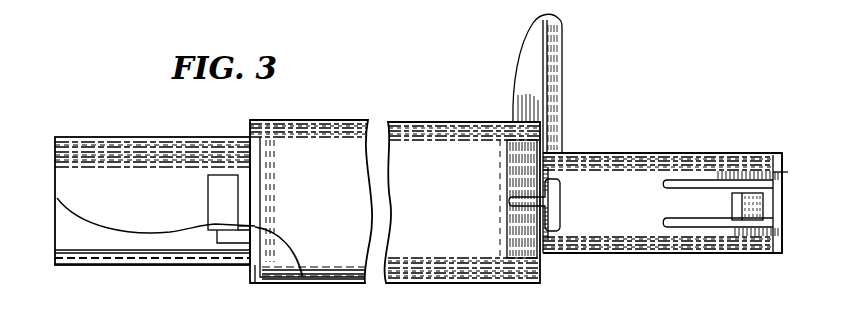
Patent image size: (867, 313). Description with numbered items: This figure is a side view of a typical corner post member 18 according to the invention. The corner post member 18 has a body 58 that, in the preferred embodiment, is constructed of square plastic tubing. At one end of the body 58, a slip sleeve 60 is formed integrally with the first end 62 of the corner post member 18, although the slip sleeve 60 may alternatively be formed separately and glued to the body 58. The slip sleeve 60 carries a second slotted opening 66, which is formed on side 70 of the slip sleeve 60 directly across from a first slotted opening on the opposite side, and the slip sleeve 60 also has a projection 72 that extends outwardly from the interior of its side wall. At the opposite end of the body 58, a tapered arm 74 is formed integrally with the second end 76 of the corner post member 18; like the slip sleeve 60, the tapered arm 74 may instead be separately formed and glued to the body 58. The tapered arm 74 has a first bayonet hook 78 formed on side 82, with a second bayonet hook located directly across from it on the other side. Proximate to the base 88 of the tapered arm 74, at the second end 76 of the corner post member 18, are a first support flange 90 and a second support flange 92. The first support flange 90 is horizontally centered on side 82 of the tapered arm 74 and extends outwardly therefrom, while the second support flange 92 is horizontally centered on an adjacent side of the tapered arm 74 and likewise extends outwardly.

The corner post member 18 is at (671, 81).
The body 58 is at (402, 122).
The slip sleeve 60 is at (126, 139).
The first end 62 is at (249, 121).
The second slotted opening 66 is at (208, 190).
The side 70 is at (163, 243).
The projection 72 is at (237, 239).
The tapered arm 74 is at (693, 149).
The second end 76 is at (533, 152).
The first bayonet hook 78 is at (760, 202).
The side 82 is at (741, 154).
The base 88 is at (563, 153).
The first support flange 90 is at (552, 197).
The second support flange 92 is at (562, 65).